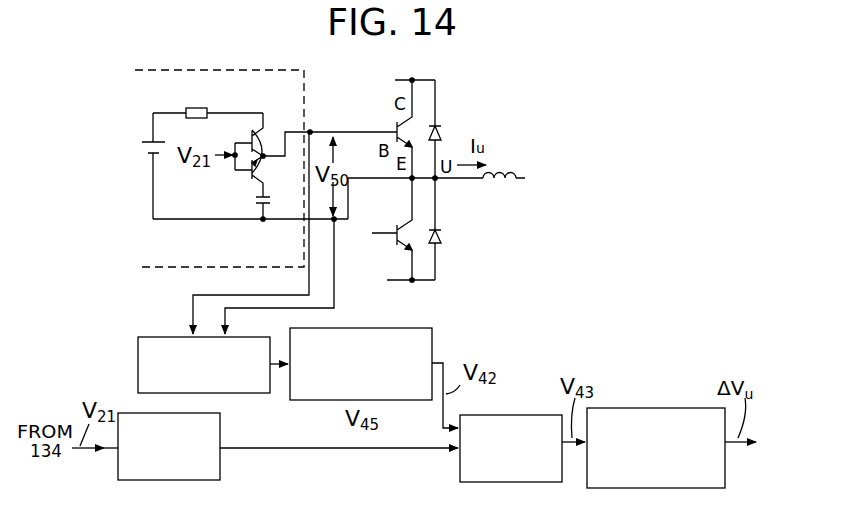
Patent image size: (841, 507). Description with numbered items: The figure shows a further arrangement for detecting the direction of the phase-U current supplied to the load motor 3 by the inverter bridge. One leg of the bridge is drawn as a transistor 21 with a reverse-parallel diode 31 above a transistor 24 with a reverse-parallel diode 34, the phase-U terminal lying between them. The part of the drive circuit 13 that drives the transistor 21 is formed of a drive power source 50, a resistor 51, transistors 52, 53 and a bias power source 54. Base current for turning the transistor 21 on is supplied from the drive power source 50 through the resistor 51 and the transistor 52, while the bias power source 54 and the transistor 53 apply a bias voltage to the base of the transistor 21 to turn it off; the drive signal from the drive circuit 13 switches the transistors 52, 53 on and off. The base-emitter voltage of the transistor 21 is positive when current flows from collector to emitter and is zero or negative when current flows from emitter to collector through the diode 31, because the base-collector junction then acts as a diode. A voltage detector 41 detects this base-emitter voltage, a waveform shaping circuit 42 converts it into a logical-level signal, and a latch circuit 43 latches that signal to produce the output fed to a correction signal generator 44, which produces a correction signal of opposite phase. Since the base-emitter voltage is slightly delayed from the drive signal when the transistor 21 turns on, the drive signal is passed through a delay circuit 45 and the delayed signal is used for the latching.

The drive circuit 13 is at (160, 69).
The drive power source 50 is at (142, 149).
The resistor 51 is at (200, 108).
The transistor 52 is at (268, 131).
The transistor 53 is at (246, 172).
The bias power source 54 is at (273, 200).
The transistor 21 is at (395, 122).
The transistor 24 is at (390, 238).
The diode 31 is at (442, 129).
The diode 34 is at (443, 236).
The load motor 3 is at (520, 174).
The voltage detector 41 is at (140, 336).
The waveform shaping circuit 42 is at (433, 343).
The latch circuit 43 is at (532, 414).
The correction signal generator 44 is at (676, 407).
The delay circuit 45 is at (222, 437).